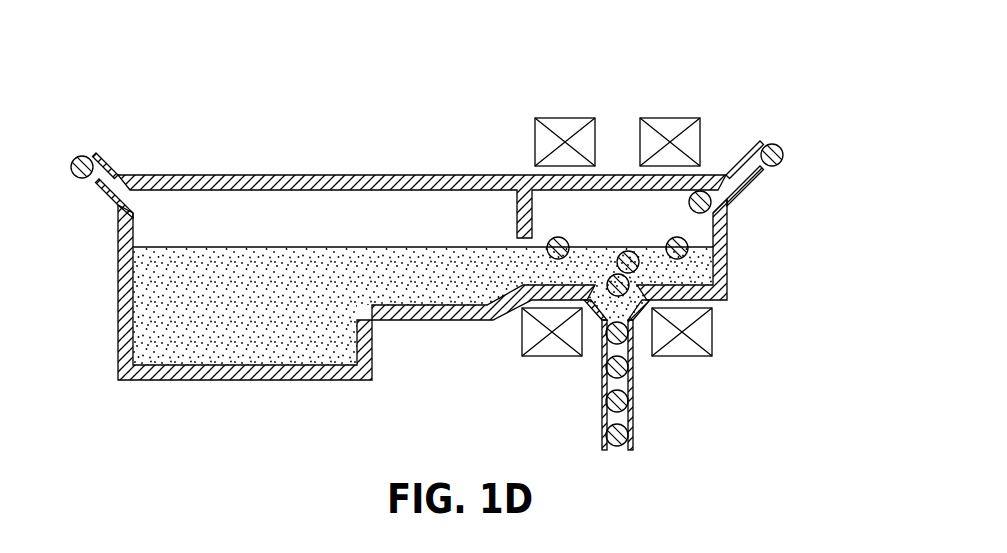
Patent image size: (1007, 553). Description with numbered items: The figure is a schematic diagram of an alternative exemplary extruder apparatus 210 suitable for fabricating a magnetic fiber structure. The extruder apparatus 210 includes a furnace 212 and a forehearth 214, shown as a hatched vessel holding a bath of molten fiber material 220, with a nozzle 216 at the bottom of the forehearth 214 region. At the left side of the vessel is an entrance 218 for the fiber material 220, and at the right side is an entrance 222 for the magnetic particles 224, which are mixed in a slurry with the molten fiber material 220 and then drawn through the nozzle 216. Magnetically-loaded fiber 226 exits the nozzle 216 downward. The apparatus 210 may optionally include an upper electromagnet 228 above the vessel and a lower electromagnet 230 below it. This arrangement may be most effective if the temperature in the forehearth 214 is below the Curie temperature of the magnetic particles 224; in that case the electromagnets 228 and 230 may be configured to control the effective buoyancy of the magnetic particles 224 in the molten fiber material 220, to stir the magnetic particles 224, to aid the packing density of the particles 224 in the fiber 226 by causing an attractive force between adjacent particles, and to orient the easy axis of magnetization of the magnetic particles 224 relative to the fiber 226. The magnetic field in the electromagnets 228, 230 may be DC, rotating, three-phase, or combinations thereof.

The extruder apparatus 210 is at (375, 153).
The furnace 212 is at (378, 233).
The forehearth 214 is at (593, 233).
The nozzle 216 is at (620, 297).
The entrance for fiber material 218 is at (103, 192).
The fiber material 220 is at (79, 154).
The entrance for magnetic particles 222 is at (745, 188).
The magnetic particles 224 is at (787, 157).
The magnetically-loaded fiber 226 is at (637, 423).
The upper electromagnet 228 is at (565, 118).
The lower electromagnet 230 is at (715, 327).